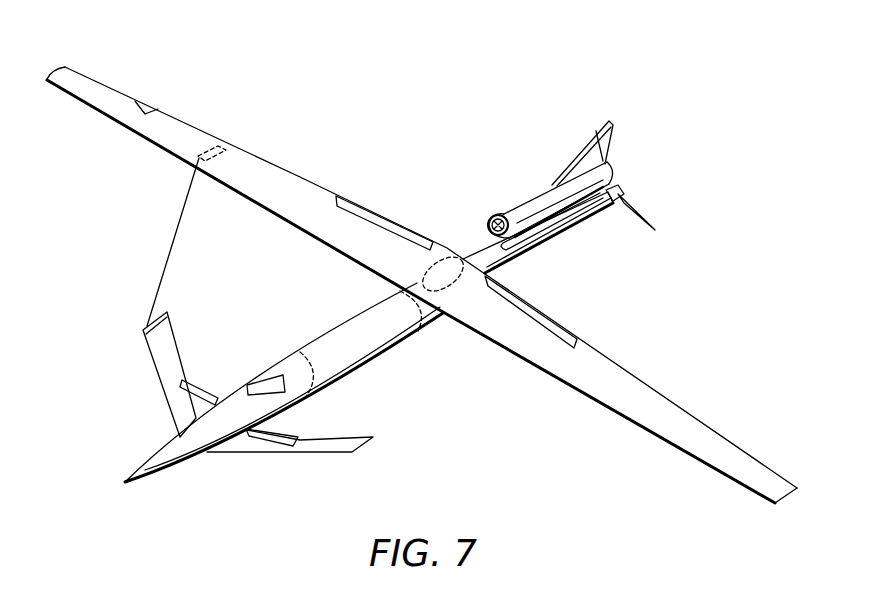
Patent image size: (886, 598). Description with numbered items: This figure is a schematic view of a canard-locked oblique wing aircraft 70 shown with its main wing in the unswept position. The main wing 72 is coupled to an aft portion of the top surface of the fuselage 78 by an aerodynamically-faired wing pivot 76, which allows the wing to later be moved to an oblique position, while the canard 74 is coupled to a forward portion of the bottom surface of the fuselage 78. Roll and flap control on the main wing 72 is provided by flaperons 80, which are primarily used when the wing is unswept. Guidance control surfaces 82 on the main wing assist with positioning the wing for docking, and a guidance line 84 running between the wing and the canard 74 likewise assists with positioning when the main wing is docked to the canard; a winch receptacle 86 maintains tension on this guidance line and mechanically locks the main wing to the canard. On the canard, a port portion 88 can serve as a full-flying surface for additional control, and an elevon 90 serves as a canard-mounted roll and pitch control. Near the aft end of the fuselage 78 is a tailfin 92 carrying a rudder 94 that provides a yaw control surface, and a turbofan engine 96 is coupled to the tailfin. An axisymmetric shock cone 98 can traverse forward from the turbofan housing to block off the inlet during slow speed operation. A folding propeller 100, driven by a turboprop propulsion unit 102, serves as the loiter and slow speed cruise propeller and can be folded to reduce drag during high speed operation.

The canard-locked oblique wing aircraft 70 is at (668, 322).
The main wing 72 is at (103, 96).
The canard 74 is at (167, 360).
The wing pivot 76 is at (443, 273).
The fuselage 78 is at (377, 345).
The flaperons 80 is at (373, 213).
The guidance control surfaces 82 is at (147, 105).
The guidance line 84 is at (173, 250).
The winch receptacle 86 is at (147, 323).
The port portion of the canard 88 is at (362, 443).
The elevon 90 is at (200, 392).
The tailfin 92 is at (580, 157).
The rudder 94 is at (603, 144).
The turbofan engine 96 is at (527, 203).
The axisymmetric shock cone 98 is at (490, 217).
The folding propeller 100 is at (640, 209).
The turboprop propulsion unit 102 is at (617, 205).